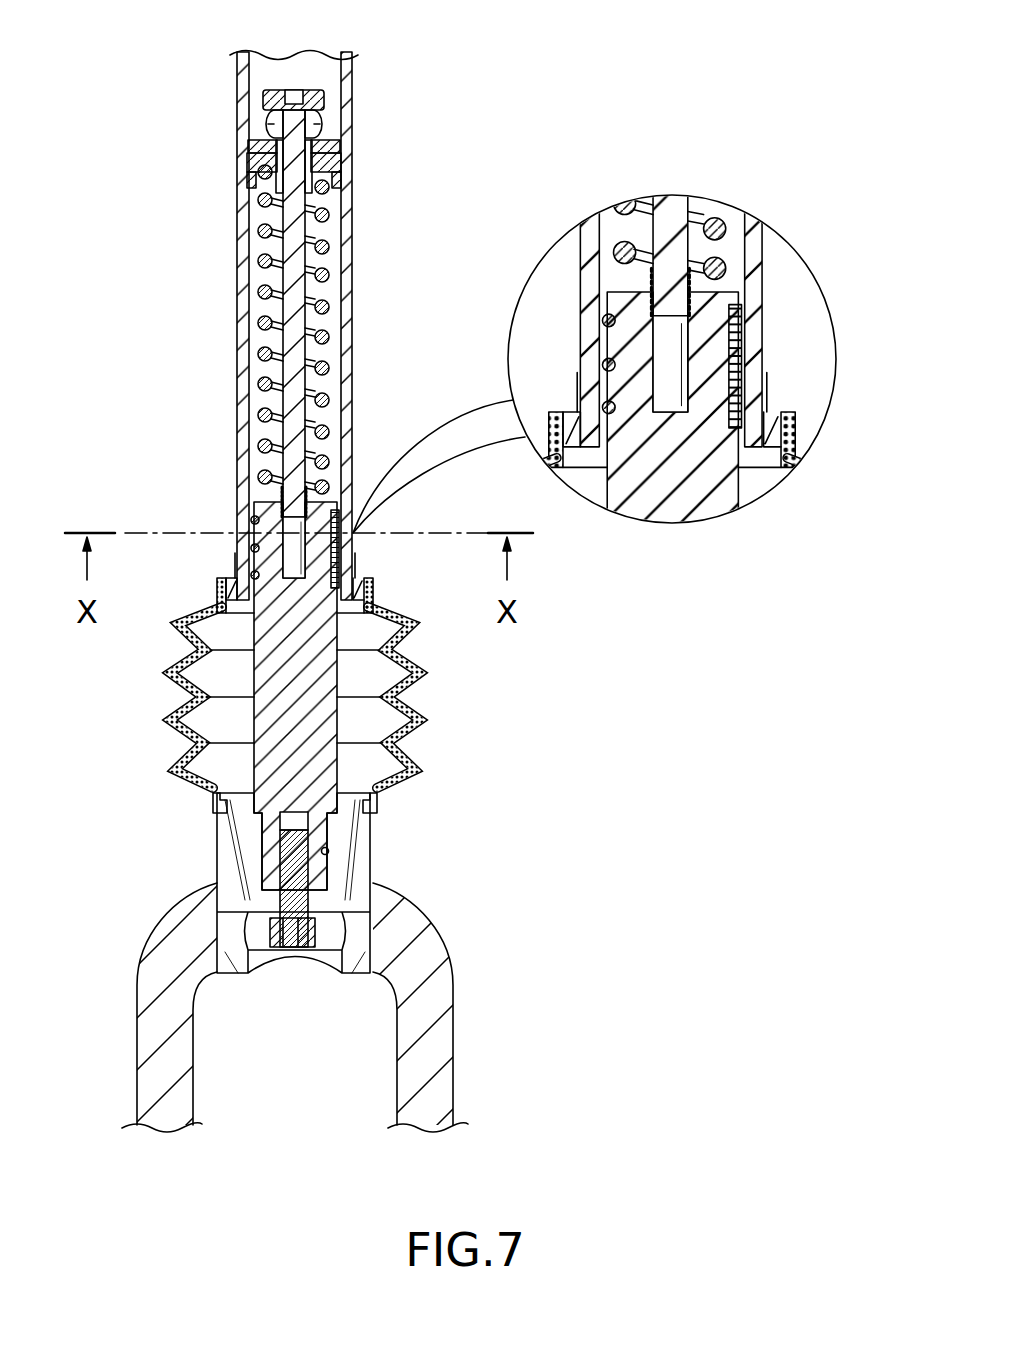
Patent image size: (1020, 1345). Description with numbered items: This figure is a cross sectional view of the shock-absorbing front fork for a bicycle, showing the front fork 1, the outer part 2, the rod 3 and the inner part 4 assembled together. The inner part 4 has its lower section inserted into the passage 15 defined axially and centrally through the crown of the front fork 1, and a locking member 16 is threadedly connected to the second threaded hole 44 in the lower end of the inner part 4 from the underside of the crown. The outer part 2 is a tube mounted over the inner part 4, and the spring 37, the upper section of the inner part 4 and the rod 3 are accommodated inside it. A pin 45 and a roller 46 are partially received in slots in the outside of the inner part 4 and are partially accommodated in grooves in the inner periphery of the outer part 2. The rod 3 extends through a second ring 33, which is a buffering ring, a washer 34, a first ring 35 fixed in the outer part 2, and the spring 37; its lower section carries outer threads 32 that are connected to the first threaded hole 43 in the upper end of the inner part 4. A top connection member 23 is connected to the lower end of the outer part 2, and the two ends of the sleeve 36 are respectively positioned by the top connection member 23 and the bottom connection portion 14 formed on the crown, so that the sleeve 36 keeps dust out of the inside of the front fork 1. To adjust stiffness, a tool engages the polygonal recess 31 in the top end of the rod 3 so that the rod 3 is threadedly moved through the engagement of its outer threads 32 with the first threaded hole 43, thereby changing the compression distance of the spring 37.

The front fork 1 is at (214, 867).
The outer part 2 is at (352, 89).
The rod 3 is at (272, 311).
The inner part 4 is at (340, 722).
The bottom connection portion 14 is at (218, 796).
The passage 15 is at (326, 852).
The locking member 16 is at (272, 930).
The top connection member 23 is at (224, 578).
The polygonal recess 31 is at (296, 104).
The outer threads 32 is at (290, 496).
The second ring 33 is at (312, 126).
The washer 34 is at (322, 152).
The first ring 35 is at (336, 168).
The sleeve 36 is at (190, 707).
The spring 37 is at (265, 198).
The first threaded hole 43 is at (292, 556).
The second threaded hole 44 is at (291, 822).
The pin 45 is at (337, 550).
The roller 46 is at (254, 518).